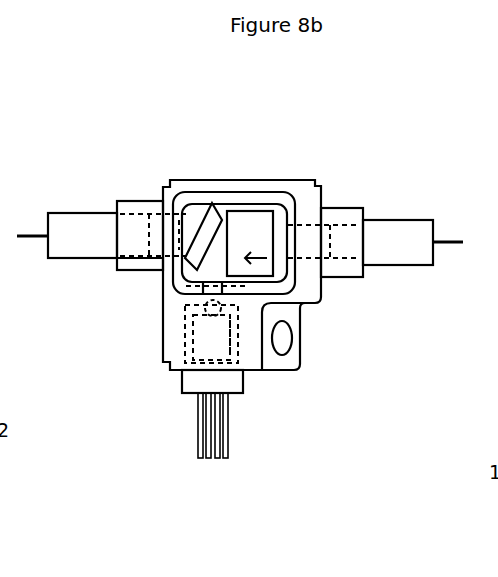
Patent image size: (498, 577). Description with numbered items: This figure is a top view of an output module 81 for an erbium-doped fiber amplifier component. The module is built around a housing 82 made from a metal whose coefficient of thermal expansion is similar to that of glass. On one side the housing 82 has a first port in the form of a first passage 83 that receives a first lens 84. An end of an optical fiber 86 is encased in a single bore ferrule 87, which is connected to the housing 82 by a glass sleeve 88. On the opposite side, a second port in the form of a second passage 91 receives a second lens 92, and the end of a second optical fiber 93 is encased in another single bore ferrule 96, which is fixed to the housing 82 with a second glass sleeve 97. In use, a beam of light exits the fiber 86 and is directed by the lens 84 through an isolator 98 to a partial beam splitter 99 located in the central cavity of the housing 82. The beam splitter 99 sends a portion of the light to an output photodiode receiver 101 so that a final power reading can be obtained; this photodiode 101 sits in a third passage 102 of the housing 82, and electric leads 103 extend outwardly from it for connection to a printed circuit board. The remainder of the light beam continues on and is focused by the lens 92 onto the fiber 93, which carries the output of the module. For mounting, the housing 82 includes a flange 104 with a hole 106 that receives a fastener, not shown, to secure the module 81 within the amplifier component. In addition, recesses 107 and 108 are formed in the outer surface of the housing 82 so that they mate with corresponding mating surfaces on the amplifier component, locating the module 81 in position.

The output module 81 is at (165, 148).
The housing 82 is at (320, 303).
The first passage 83 is at (288, 197).
The first lens 84 is at (308, 242).
The optical fiber 86 is at (447, 245).
The single bore ferrule 87 is at (395, 212).
The glass sleeve 88 is at (362, 277).
The second passage 91 is at (190, 225).
The second lens 92 is at (159, 218).
The optical fiber 93 is at (25, 245).
The single bore ferrule 96 is at (93, 213).
The second glass sleeve 97 is at (125, 275).
The isolator 98 is at (243, 223).
The partial beam splitter 99 is at (210, 205).
The output photodiode receiver 101 is at (183, 395).
The third passage 102 is at (245, 344).
The electric leads 103 is at (200, 458).
The flange 104 is at (297, 362).
The hole 106 is at (282, 347).
The recess 107 is at (313, 185).
The recess 108 is at (170, 362).